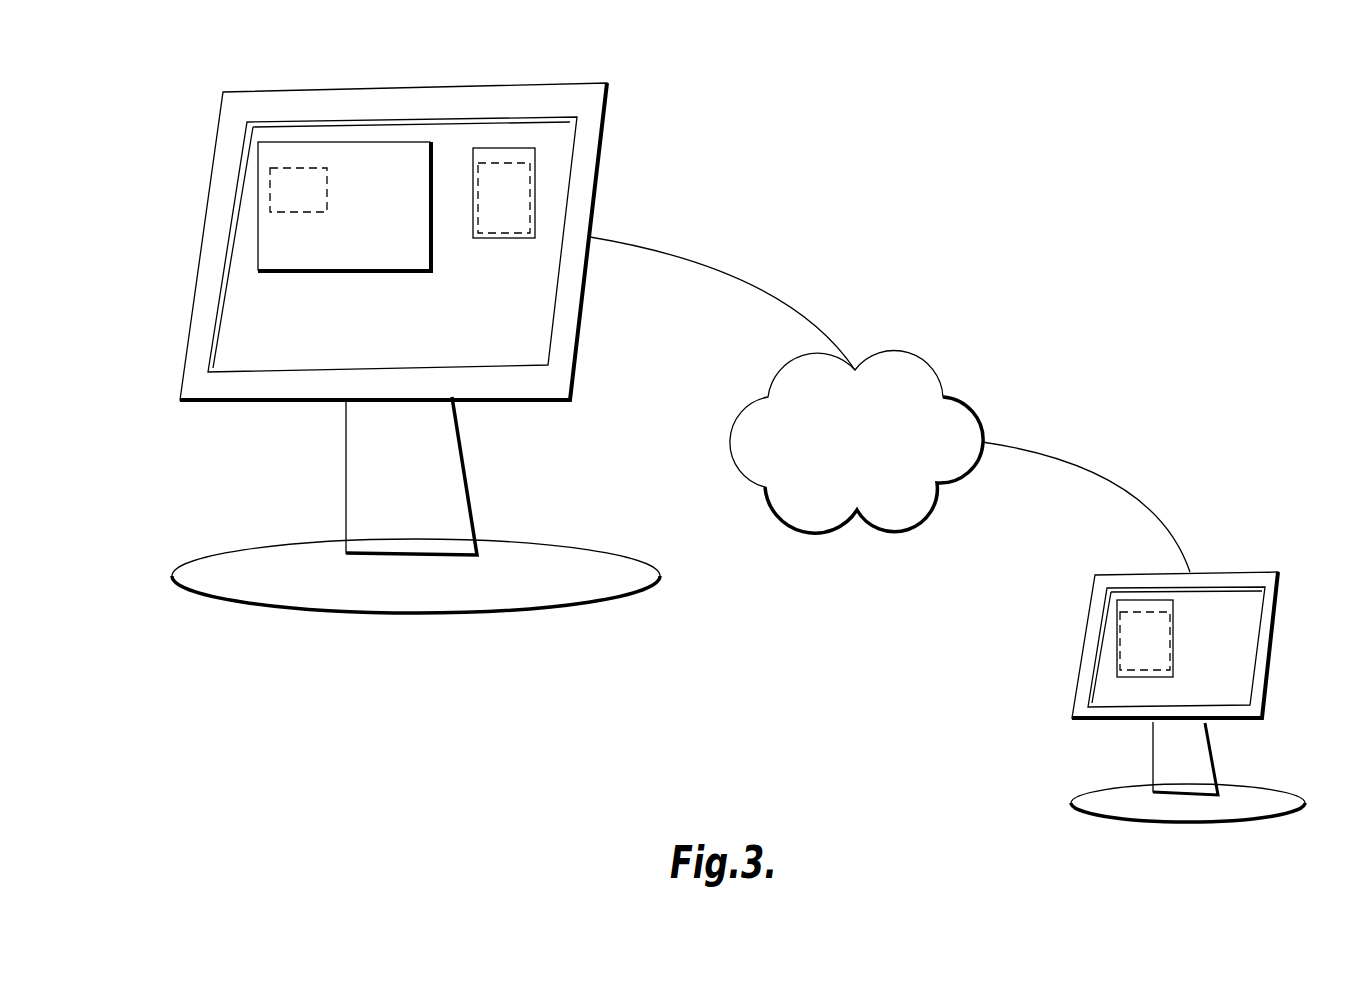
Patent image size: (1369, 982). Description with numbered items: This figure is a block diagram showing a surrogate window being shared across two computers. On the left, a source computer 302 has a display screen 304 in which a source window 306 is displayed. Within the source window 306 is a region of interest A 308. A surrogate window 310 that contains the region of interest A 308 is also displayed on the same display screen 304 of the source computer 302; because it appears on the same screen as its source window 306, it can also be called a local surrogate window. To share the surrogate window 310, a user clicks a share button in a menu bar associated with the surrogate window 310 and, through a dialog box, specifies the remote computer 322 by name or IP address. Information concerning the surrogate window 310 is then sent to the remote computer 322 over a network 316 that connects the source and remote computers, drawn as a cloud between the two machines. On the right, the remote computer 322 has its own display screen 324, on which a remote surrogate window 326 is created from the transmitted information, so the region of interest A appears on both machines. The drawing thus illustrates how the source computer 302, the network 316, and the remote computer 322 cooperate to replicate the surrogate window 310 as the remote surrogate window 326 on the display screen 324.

The source computer 302 is at (430, 84).
The display screen 304 is at (487, 115).
The source window 306 is at (343, 272).
The region of interest A 308 is at (328, 187).
The surrogate window 310 is at (512, 238).
The network 316 is at (940, 387).
The remote computer 322 is at (1228, 568).
The display screen 324 is at (1262, 625).
The remote surrogate window 326 is at (1175, 632).